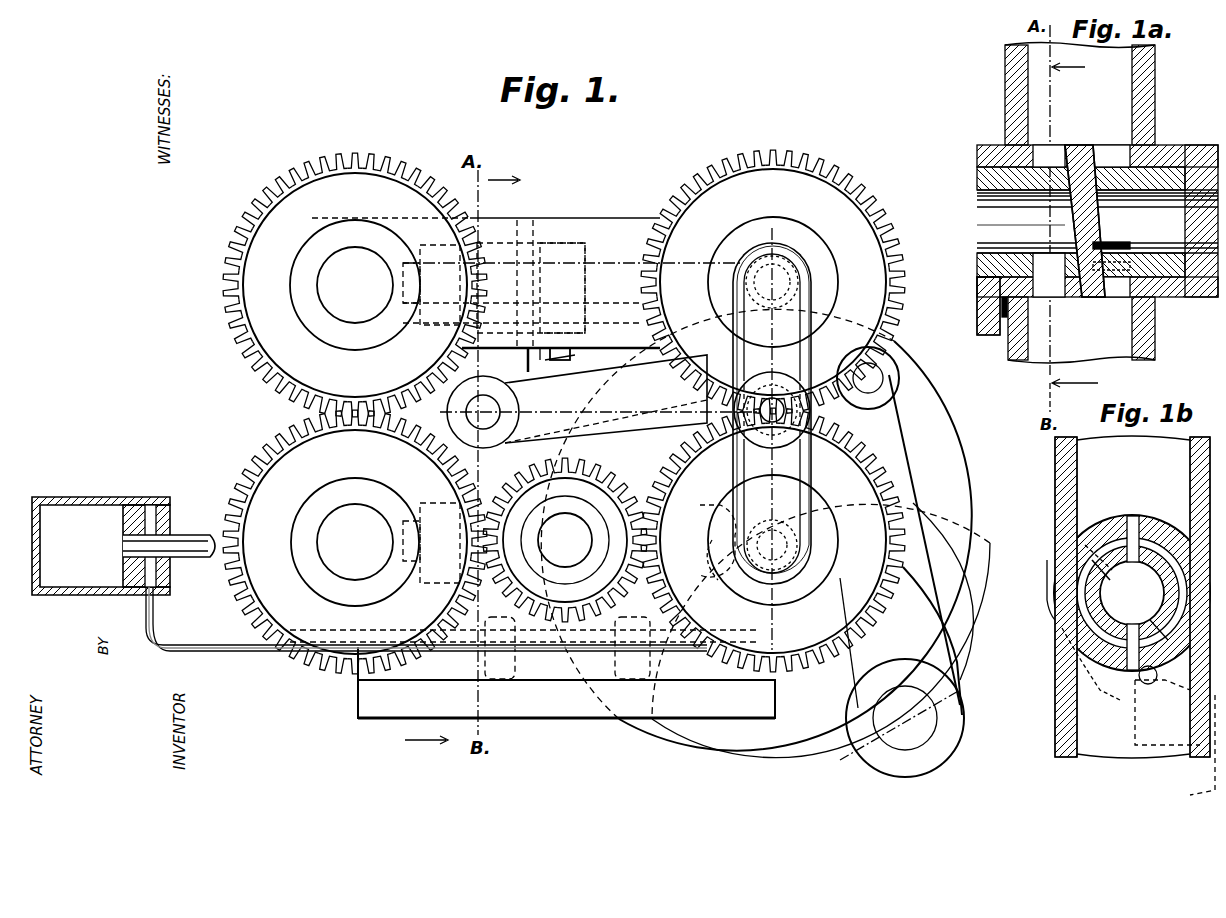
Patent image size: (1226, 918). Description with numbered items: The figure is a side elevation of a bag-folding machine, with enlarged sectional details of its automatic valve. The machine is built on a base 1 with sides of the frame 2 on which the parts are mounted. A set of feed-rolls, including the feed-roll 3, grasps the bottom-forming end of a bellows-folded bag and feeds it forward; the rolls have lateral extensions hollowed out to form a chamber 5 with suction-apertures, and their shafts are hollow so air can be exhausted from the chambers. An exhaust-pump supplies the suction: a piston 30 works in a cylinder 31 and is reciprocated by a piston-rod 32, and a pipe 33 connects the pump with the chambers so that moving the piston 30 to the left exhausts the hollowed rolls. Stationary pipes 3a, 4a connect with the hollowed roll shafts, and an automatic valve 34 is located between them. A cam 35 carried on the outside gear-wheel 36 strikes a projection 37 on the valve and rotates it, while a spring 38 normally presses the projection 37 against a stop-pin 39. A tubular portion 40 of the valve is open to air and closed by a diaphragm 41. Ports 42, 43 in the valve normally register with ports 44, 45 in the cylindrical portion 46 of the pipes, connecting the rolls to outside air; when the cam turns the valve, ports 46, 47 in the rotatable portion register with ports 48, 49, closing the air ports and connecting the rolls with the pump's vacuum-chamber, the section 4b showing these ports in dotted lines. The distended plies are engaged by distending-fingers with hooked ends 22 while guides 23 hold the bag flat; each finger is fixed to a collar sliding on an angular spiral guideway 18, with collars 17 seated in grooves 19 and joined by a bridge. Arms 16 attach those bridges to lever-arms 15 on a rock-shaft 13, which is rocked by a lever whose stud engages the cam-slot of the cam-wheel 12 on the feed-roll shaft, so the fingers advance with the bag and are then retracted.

In FIG. 1, the base 1 is at (566, 682).
In FIG. 1, the sides of the frame 2 is at (608, 236).
In FIG. 1, the feed-roll 3 is at (868, 200).
In FIG. 1, the stationary pipe 3a is at (795, 292).
In FIG. 1a, the stationary pipe 3a is at (1118, 76).
In FIG. 1, the stationary pipe 4a is at (812, 488).
In FIG. 1a, the stationary pipe 4a is at (1120, 350).
In FIG. 1b, the tubular shaft section 4b is at (1150, 532).
In FIG. 1, the chamber 5 is at (392, 162).
In FIG. 1, the cam-wheel 12 is at (712, 762).
In FIG. 1, the rock-shaft 13 is at (925, 722).
In FIG. 1, the lever-arms 15 is at (897, 462).
In FIG. 1, the arms 16 is at (577, 401).
In FIG. 1, the collars 17 is at (444, 252).
In FIG. 1, the angular spiral guideway 18 is at (612, 278).
In FIG. 1, the grooves 19 is at (676, 538).
In FIG. 1, the distending-fingers 22 is at (571, 355).
In FIG. 1, the guides 23 is at (508, 466).
In FIG. 1, the piston 30 is at (124, 520).
In FIG. 1, the cylinder 31 is at (80, 590).
In FIG. 1, the piston-rod 32 is at (190, 556).
In FIG. 1, the pipe 33 is at (160, 610).
In FIG. 1a, the automatic valve 34 is at (1016, 178).
In FIG. 1, the cam 35 is at (707, 562).
In FIG. 1b, the cam 35 is at (1200, 765).
In FIG. 1, the outside gear-wheel 36 is at (240, 282).
In FIG. 1, the projection 37 is at (752, 440).
In FIG. 1a, the projection 37 is at (976, 322).
In FIG. 1b, the projection 37 is at (1110, 690).
In FIG. 1b, the spring 38 is at (1058, 608).
In FIG. 1, the stop-pin 39 is at (780, 448).
In FIG. 1b, the stop-pin 39 is at (1140, 672).
In FIG. 1a, the tubular portion 40 is at (995, 226).
In FIG. 1a, the diaphragm 41 is at (1080, 222).
In FIG. 1b, the diaphragm 41 is at (1133, 556).
In FIG. 1a, the port 42 is at (1072, 158).
In FIG. 1a, the port 43 is at (1062, 290).
In FIG. 1b, the port 43 is at (1128, 640).
In FIG. 1a, the port 44 is at (1044, 158).
In FIG. 1b, the port 44 is at (1133, 530).
In FIG. 1a, the port 45 is at (1072, 298).
In FIG. 1b, the port 45 is at (1132, 670).
In FIG. 1a, the cylindrical portion 46 is at (1112, 241).
In FIG. 1b, the cylindrical portion 46 is at (1160, 628).
In FIG. 1b, the port 47 is at (1108, 560).
In FIG. 1a, the port 48 is at (1110, 298).
In FIG. 1a, the port 49 is at (1105, 160).